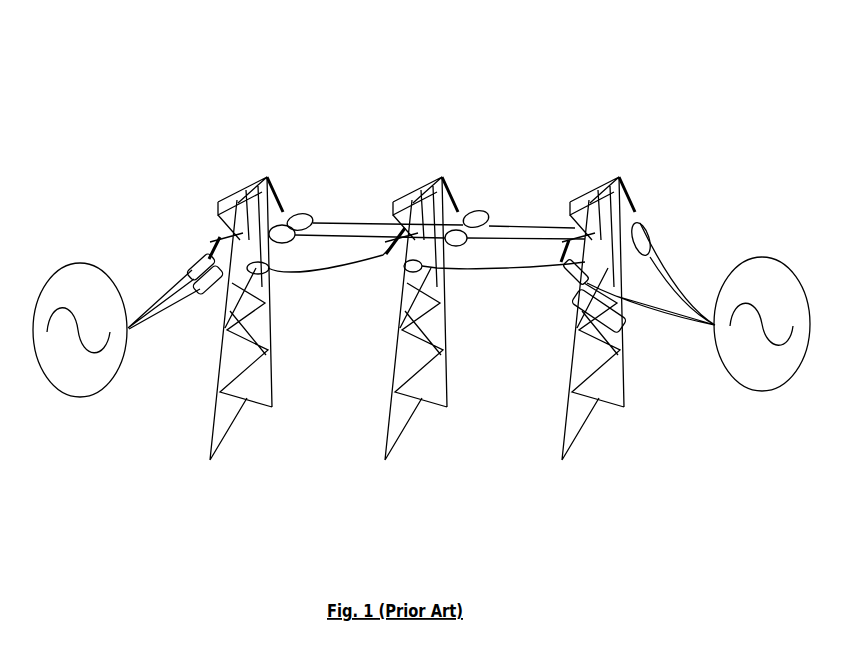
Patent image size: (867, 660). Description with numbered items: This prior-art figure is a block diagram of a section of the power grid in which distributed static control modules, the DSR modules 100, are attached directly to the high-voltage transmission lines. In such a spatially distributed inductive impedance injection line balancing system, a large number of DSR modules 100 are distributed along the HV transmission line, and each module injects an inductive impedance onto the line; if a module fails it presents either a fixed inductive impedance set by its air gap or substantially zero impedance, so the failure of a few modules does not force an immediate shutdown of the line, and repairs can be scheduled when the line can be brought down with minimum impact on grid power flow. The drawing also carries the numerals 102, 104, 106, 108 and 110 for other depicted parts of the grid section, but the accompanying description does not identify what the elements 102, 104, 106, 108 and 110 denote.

The DSR module 100 is at (302, 202).
The power transmission system 102 is at (470, 68).
The generator 104 is at (78, 263).
The load / generator 106 is at (760, 257).
The transmission line 108 is at (510, 220).
The insulator 110 is at (210, 240).